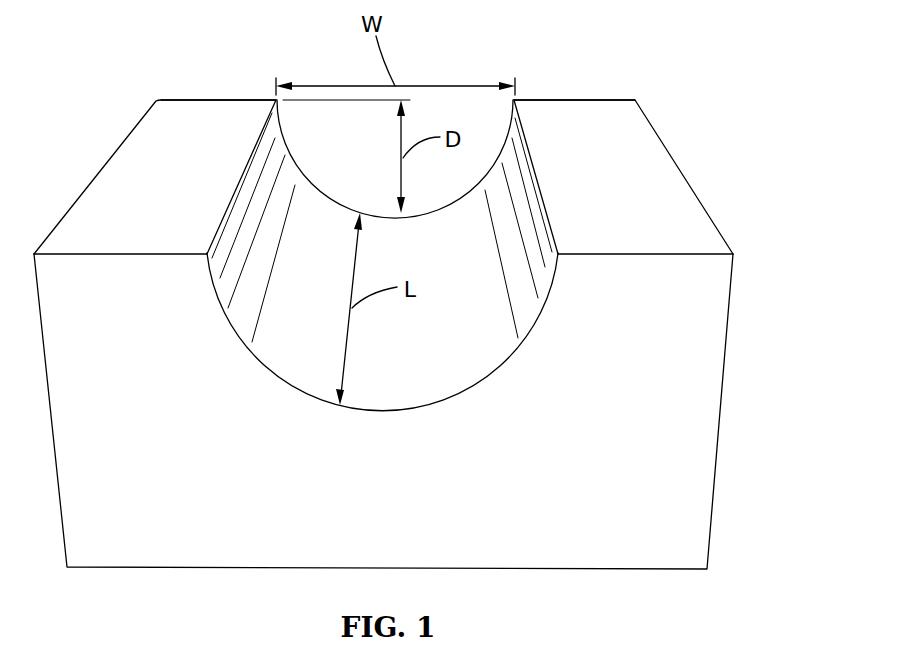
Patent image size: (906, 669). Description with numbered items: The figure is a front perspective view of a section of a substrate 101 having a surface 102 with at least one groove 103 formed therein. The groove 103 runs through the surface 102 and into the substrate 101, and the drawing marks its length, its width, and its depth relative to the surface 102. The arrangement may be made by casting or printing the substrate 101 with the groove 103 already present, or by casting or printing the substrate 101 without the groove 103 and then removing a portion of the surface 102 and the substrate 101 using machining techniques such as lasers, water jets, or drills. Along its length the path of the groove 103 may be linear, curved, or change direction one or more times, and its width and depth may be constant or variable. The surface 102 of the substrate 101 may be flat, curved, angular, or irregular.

The substrate 101 is at (628, 465).
The surface 102 is at (160, 185).
The groove 103 is at (475, 277).